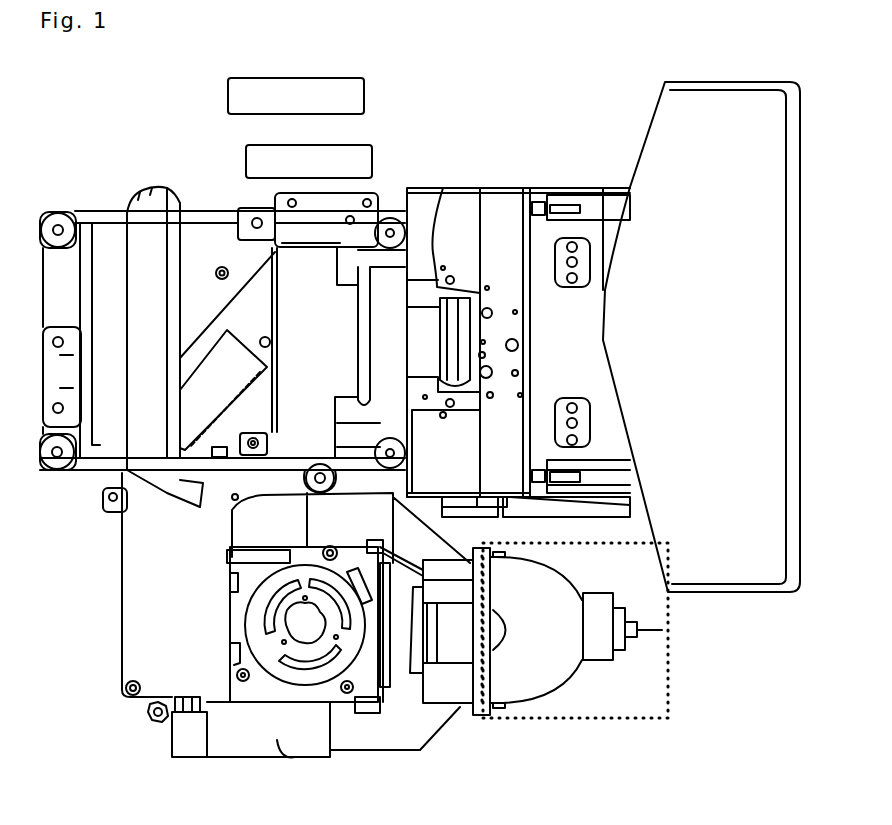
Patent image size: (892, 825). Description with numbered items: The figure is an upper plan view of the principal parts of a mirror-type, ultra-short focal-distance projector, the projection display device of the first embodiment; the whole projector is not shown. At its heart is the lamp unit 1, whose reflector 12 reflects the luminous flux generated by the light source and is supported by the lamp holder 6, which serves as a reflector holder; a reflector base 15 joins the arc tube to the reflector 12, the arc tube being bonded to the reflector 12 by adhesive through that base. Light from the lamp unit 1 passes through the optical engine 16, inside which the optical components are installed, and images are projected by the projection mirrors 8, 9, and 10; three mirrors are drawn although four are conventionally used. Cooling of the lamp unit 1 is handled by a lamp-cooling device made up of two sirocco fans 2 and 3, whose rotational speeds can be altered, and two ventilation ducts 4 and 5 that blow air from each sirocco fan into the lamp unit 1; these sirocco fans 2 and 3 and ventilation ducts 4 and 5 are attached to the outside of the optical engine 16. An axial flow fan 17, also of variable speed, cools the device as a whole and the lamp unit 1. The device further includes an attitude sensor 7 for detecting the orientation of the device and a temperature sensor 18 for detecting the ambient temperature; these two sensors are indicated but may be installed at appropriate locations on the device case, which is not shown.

The lamp unit 1 is at (560, 718).
The sirocco fan 2 is at (307, 622).
The sirocco fan 3 is at (262, 730).
The ventilation duct 4 is at (232, 510).
The ventilation duct 5 is at (290, 750).
The lamp holder 6 is at (447, 677).
The attitude sensor 7 is at (275, 146).
The projection mirror 8 is at (460, 323).
The projection mirror 9 is at (143, 337).
The projection mirror 10 is at (658, 253).
The reflector 12 is at (527, 667).
The reflector base 15 is at (595, 633).
The optical engine 16 is at (177, 651).
The axial flow fan 17 is at (545, 507).
The temperature sensor 18 is at (305, 78).